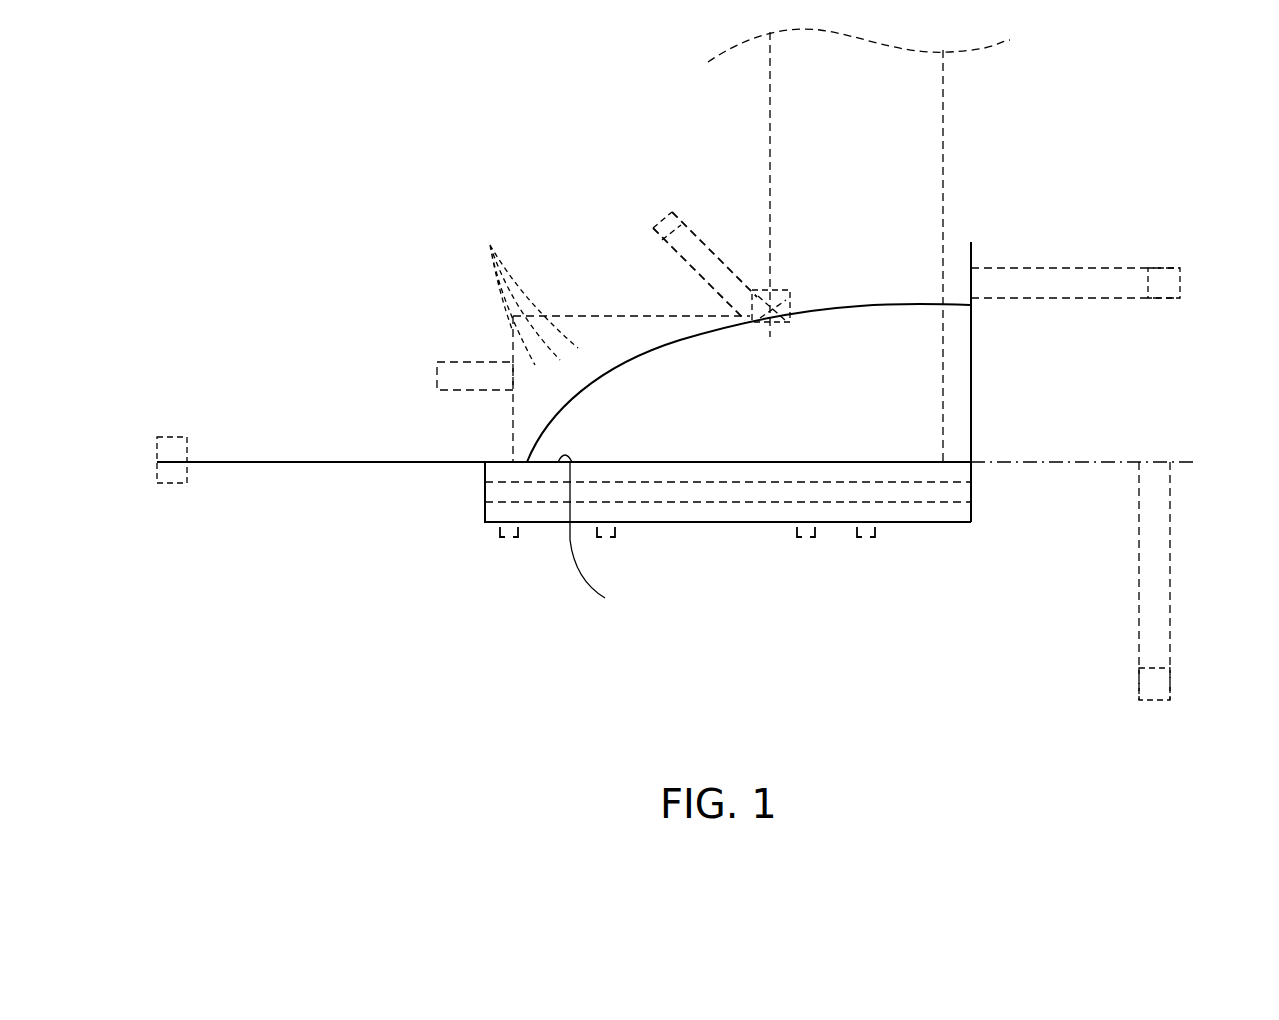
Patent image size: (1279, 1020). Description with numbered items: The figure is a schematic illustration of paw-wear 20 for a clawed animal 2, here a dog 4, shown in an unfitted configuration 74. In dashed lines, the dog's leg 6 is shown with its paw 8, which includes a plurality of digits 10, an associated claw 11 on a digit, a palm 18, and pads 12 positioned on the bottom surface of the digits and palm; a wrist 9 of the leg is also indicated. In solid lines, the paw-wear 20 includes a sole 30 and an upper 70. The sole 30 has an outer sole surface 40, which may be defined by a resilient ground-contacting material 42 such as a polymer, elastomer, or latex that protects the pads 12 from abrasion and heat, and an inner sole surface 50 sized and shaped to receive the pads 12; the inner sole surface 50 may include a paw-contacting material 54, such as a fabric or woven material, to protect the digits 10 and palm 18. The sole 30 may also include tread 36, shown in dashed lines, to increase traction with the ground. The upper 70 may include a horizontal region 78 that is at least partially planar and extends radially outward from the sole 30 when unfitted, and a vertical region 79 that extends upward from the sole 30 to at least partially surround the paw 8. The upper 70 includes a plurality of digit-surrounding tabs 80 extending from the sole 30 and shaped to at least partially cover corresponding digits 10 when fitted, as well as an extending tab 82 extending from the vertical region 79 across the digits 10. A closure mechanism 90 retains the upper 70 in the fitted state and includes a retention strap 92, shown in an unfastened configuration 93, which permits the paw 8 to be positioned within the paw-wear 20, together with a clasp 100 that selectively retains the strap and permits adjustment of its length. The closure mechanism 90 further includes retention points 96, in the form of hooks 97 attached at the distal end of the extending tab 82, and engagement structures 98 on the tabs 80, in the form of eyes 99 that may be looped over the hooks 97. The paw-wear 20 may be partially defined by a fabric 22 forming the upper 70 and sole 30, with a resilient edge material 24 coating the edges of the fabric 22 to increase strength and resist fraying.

The clawed animal 2 is at (660, 88).
The dog 4 is at (672, 128).
The leg 6 is at (977, 147).
The paw 8 is at (590, 314).
The wrist 9 is at (899, 290).
The digits 10 is at (527, 289).
The claw 11 is at (437, 375).
The pads 12 is at (778, 462).
The palm 18 is at (690, 462).
The paw-wear 20 is at (815, 632).
The fabric 22 is at (397, 462).
The resilient edge material 24 is at (608, 380).
The sole 30 is at (482, 525).
The tread 36 is at (510, 540).
The outer sole surface 40 is at (540, 528).
The resilient ground-contacting material 42 is at (900, 500).
The inner sole surface 50 is at (595, 538).
The paw-contacting material 54 is at (958, 472).
The upper 70 is at (152, 357).
The unfitted configuration 74 is at (208, 258).
The horizontal region 78 is at (250, 505).
The vertical region 79 is at (998, 337).
The digit-surrounding tabs 80 is at (358, 462).
The extending tab 82 is at (712, 260).
The closure mechanism 90 is at (650, 235).
The retention strap 92 is at (1165, 262).
The unfastened configuration 93 is at (1130, 300).
The retention point 96 is at (653, 235).
The hooks 97 is at (680, 218).
The engagement structures 98 is at (172, 482).
The eyes 99 is at (178, 482).
The clasp 100 is at (1180, 283).